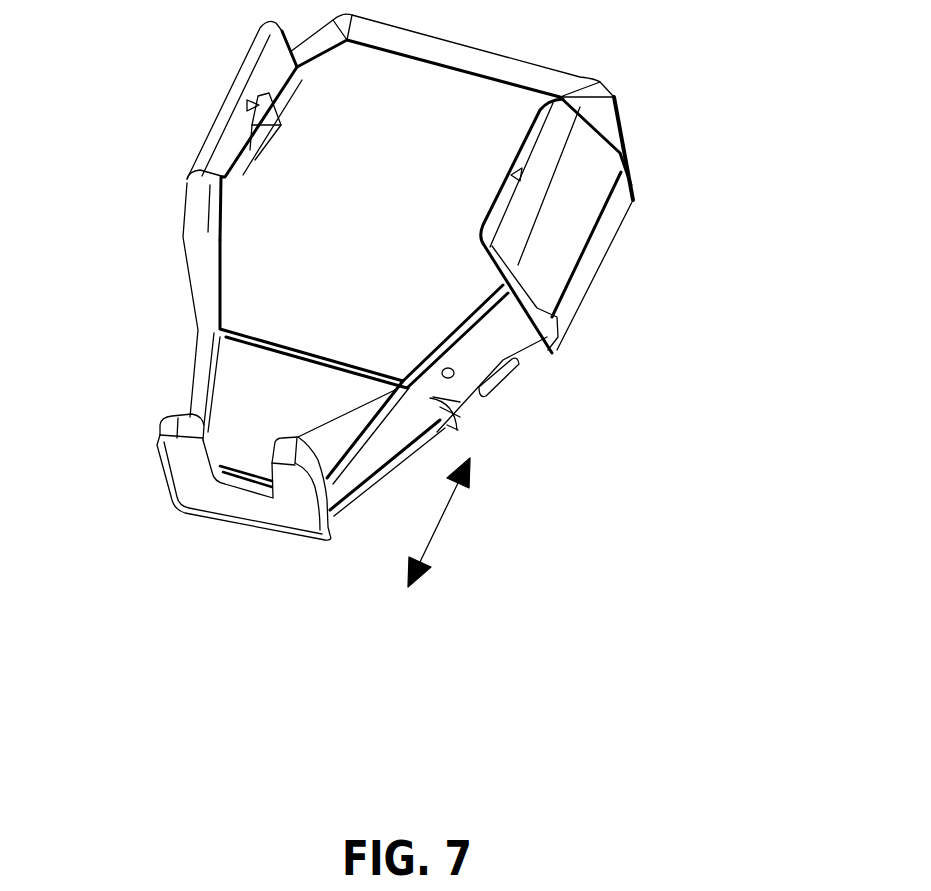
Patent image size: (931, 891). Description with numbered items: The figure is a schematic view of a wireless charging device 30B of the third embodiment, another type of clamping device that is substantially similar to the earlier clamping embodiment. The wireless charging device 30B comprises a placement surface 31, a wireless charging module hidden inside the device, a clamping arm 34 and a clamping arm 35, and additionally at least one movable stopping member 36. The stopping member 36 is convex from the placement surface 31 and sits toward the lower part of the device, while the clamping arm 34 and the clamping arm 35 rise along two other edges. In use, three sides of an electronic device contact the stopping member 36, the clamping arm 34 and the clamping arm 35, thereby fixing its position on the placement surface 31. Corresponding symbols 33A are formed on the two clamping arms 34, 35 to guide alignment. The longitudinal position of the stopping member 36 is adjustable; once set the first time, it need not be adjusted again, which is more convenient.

The placement surface 31 is at (277, 260).
The clamping arm 34 is at (247, 73).
The clamping arm 35 is at (538, 133).
The symbols 33A is at (247, 105).
The stopping member 36 is at (185, 418).
The wireless charging device 30B is at (507, 380).